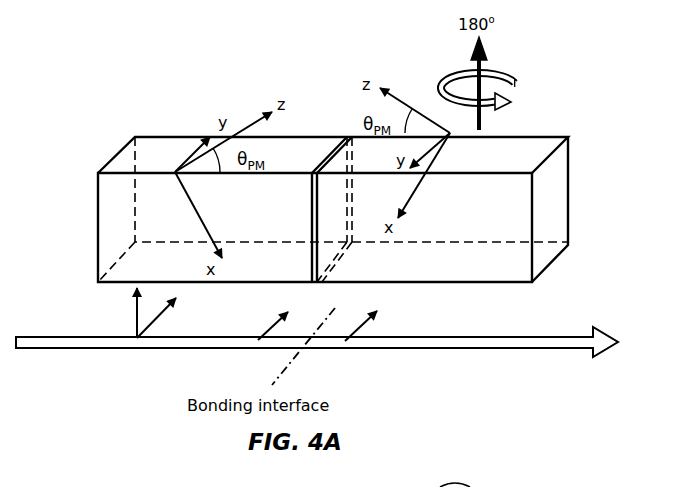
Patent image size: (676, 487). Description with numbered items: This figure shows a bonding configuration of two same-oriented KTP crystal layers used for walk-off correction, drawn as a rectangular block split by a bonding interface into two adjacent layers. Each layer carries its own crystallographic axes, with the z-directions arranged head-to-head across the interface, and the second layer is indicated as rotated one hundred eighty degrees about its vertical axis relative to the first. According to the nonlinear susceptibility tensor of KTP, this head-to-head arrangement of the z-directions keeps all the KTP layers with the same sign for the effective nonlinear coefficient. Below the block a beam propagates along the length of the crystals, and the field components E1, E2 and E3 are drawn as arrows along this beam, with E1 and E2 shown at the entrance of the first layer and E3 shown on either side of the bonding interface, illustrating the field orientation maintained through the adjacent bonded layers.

The electric field component E1 is at (170, 318).
The electric field component E2 is at (121, 313).
The electric field component E3 is at (336, 315).